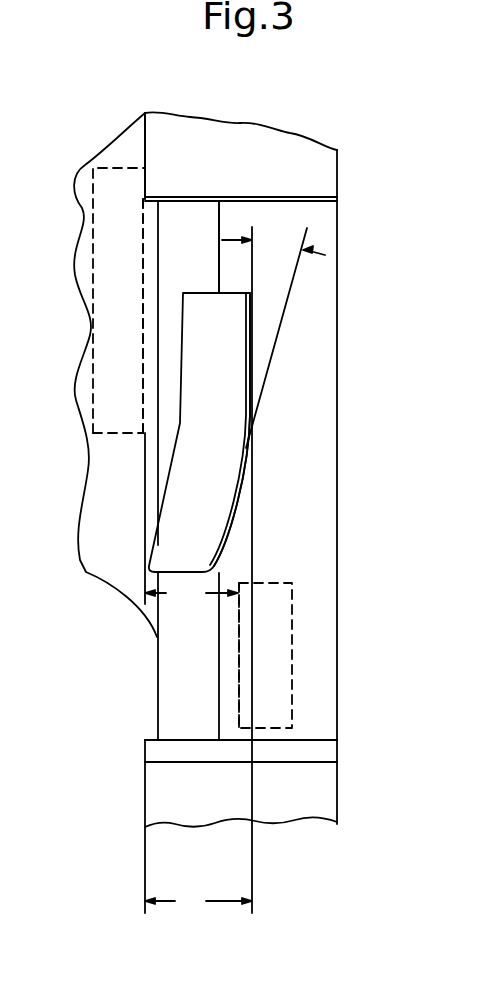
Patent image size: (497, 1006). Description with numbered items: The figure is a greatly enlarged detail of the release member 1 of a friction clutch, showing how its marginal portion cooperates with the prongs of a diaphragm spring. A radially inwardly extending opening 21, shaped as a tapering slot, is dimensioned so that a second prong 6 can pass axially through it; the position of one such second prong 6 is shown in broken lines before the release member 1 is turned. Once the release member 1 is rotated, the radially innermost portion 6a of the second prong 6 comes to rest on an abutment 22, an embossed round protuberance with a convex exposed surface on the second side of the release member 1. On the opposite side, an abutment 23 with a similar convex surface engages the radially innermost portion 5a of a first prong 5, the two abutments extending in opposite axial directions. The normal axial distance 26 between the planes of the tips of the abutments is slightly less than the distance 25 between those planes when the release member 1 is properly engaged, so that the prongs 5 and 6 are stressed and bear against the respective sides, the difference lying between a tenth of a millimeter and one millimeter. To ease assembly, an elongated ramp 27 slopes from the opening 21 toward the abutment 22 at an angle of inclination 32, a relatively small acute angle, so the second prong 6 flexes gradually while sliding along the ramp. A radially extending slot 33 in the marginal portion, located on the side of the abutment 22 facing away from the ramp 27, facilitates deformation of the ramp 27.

The release member 1 is at (305, 547).
The first prong 5 is at (112, 248).
The radially innermost portion of first prong 5a is at (147, 246).
The second prong 6 is at (277, 677).
The radially innermost portion of second prong 6a is at (239, 682).
The opening 21 is at (165, 731).
The abutment 22 is at (250, 370).
The abutment 23 is at (144, 120).
The distance 25 is at (198, 902).
The normal axial distance 26 is at (191, 595).
The ramp 27 is at (236, 494).
The angle of inclination 32 is at (273, 244).
The slot 33 is at (206, 228).